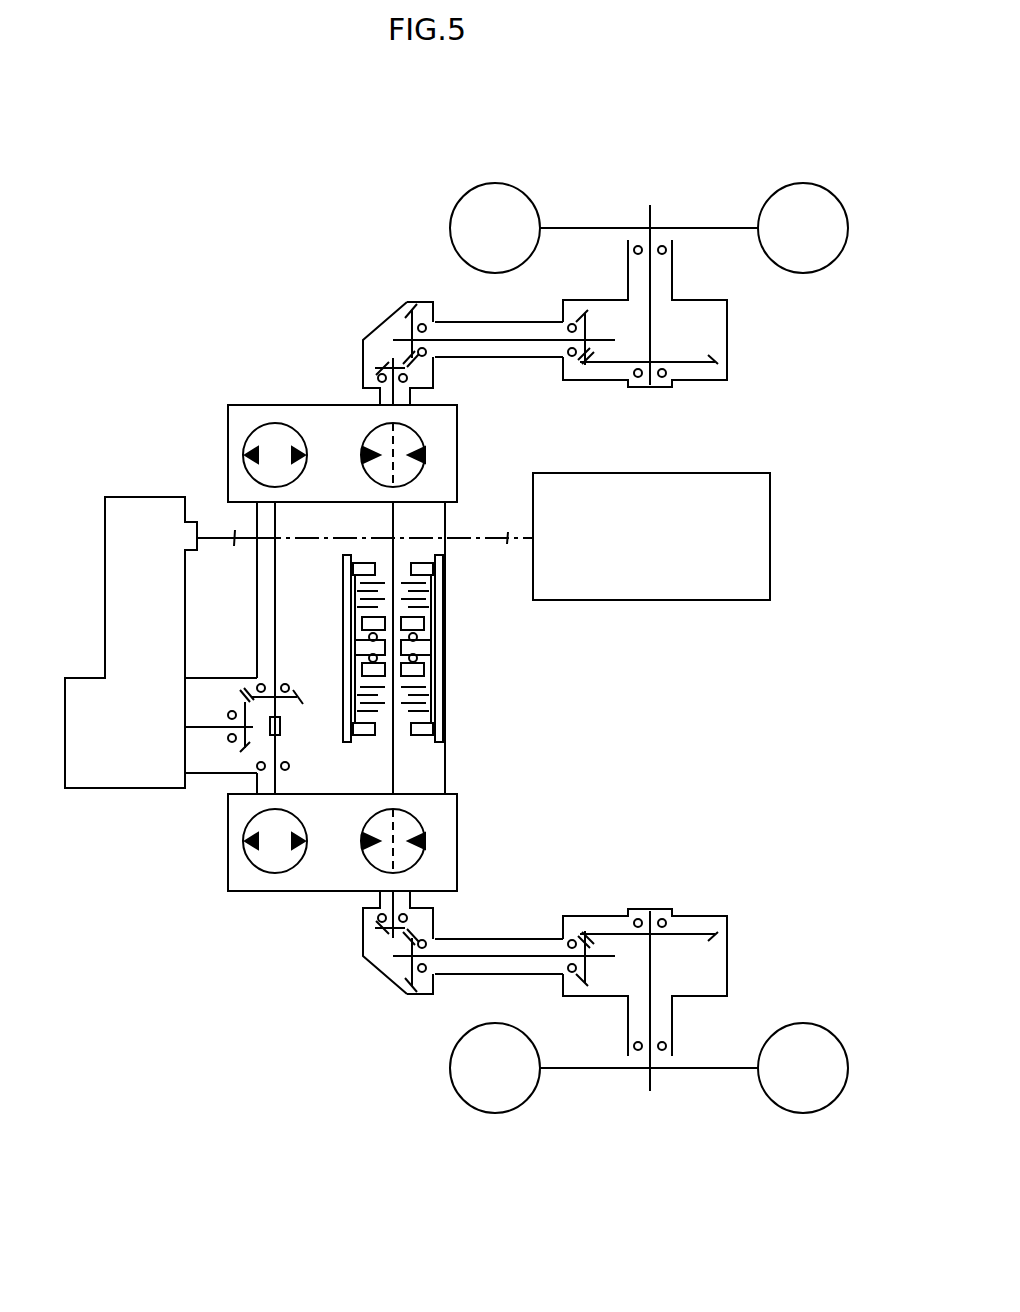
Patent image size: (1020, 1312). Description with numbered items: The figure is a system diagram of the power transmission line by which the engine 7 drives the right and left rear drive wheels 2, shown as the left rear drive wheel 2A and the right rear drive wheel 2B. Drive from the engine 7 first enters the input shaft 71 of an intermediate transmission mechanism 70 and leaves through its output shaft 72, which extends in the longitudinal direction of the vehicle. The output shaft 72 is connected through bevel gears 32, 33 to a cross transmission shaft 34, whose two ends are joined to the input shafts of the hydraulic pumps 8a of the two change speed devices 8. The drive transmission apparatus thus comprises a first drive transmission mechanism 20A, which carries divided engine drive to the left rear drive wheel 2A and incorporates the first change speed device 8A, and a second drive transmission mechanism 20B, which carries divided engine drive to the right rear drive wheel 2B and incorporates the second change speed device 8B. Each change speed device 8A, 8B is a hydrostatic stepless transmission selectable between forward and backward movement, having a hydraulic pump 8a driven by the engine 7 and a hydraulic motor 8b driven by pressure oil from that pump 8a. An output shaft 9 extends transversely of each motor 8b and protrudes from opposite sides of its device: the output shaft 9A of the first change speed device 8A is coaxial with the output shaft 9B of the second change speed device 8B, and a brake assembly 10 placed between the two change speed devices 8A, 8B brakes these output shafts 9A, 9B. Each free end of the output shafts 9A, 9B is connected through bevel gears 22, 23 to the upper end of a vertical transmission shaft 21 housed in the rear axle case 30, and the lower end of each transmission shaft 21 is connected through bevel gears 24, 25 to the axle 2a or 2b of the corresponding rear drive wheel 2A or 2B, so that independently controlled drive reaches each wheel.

The rear drive wheel 2 is at (649, 652).
The left rear drive wheel 2A is at (497, 1113).
The right rear drive wheel 2B is at (497, 183).
The axle 2a is at (655, 1093).
The axle 2b is at (655, 203).
The engine 7 is at (772, 538).
The change speed device 8 is at (259, 648).
The first change speed device 8A is at (226, 858).
The second change speed device 8B is at (226, 444).
The hydraulic pump 8a is at (265, 426).
The hydraulic motor 8b is at (422, 442).
The output shaft 9 is at (486, 648).
The output shaft 9A is at (397, 762).
The output shaft 9B is at (397, 521).
The brake assembly 10 is at (462, 652).
The first drive transmission mechanism 20A is at (512, 936).
The second drive transmission mechanism 20B is at (512, 360).
The vertical transmission shaft 21 is at (532, 338).
The bevel gear 22 is at (383, 366).
The bevel gear 23 is at (412, 312).
The bevel gear 24 is at (588, 328).
The bevel gear 25 is at (680, 364).
The rear axle case 30 is at (728, 340).
The bevel gear 32 is at (248, 746).
The bevel gear 33 is at (296, 690).
The cross transmission shaft 34 is at (276, 618).
The intermediate transmission mechanism 70 is at (102, 630).
The input shaft 71 is at (233, 532).
The output shaft 72 is at (203, 725).